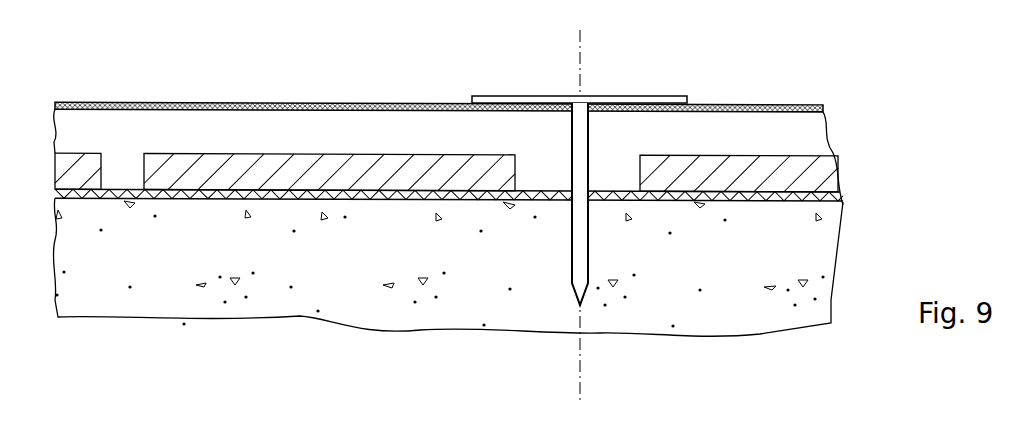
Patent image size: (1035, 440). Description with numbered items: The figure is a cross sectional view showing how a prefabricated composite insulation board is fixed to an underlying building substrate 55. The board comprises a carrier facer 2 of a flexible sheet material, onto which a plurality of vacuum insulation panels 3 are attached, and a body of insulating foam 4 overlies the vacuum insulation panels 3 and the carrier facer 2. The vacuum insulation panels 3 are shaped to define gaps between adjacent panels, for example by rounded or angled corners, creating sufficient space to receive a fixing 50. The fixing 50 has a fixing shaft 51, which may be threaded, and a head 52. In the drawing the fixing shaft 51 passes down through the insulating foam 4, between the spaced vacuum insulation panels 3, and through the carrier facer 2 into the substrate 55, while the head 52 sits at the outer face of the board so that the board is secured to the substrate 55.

The carrier facer 2 is at (177, 195).
The vacuum insulation panels 3 is at (78, 168).
The insulating foam 4 is at (187, 125).
The fixing 50 is at (579, 211).
The fixing shaft 51 is at (570, 277).
The head 52 is at (630, 97).
The substrate 55 is at (722, 288).